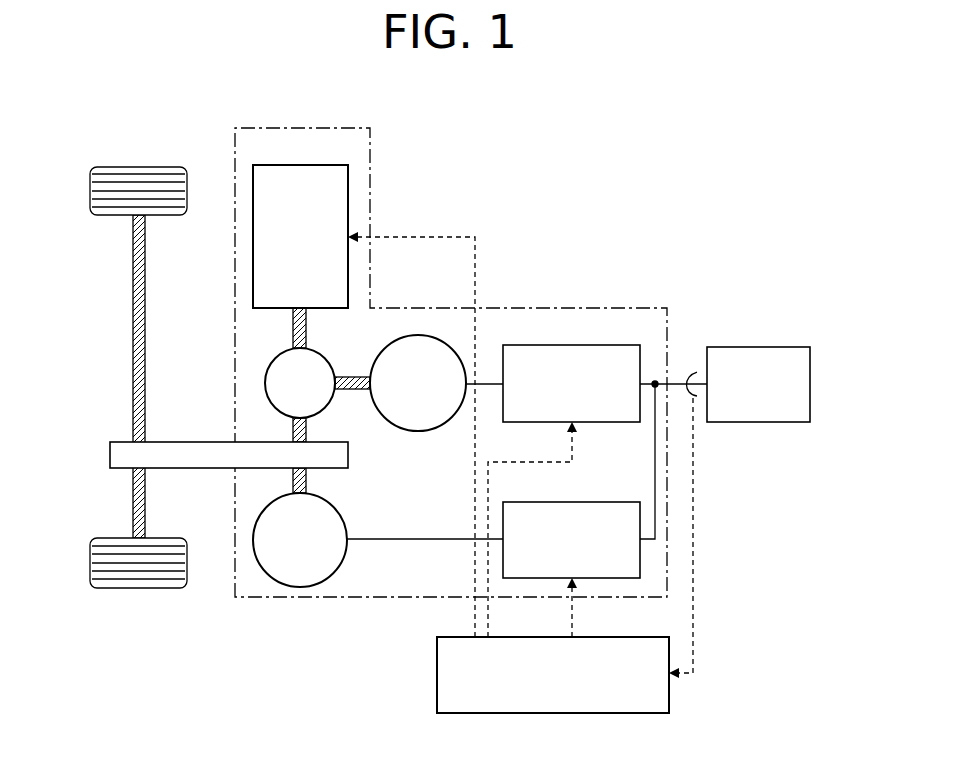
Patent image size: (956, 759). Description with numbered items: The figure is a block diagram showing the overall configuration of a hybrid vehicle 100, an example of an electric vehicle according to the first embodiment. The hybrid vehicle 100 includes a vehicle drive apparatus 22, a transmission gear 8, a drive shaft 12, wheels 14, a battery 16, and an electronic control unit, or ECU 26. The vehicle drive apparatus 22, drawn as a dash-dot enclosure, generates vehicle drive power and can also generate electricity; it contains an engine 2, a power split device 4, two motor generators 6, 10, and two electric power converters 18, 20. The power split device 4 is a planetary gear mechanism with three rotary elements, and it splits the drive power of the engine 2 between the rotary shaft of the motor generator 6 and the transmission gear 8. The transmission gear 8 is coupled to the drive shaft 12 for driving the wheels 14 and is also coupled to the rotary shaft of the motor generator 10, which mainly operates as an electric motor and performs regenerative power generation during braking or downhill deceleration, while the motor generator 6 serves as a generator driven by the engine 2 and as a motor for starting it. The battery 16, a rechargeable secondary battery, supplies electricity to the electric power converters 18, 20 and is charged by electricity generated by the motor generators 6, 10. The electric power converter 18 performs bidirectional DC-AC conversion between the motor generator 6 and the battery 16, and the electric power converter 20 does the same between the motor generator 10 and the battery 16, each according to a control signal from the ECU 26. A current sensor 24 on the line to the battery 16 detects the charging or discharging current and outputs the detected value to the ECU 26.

The hybrid vehicle 100 is at (147, 122).
The engine 2 is at (320, 165).
The power split device 4 is at (278, 356).
The motor generator 6 is at (427, 430).
The transmission gear 8 is at (185, 442).
The motor generator 10 is at (340, 507).
The drive shaft 12 is at (146, 303).
The wheels 14 is at (157, 167).
The battery 16 is at (770, 347).
The electric power converter 18 is at (598, 345).
The electric power converter 20 is at (598, 502).
The vehicle drive apparatus 22 is at (305, 128).
The current sensor 24 is at (694, 370).
The electronic control unit (ECU) 26 is at (630, 620).